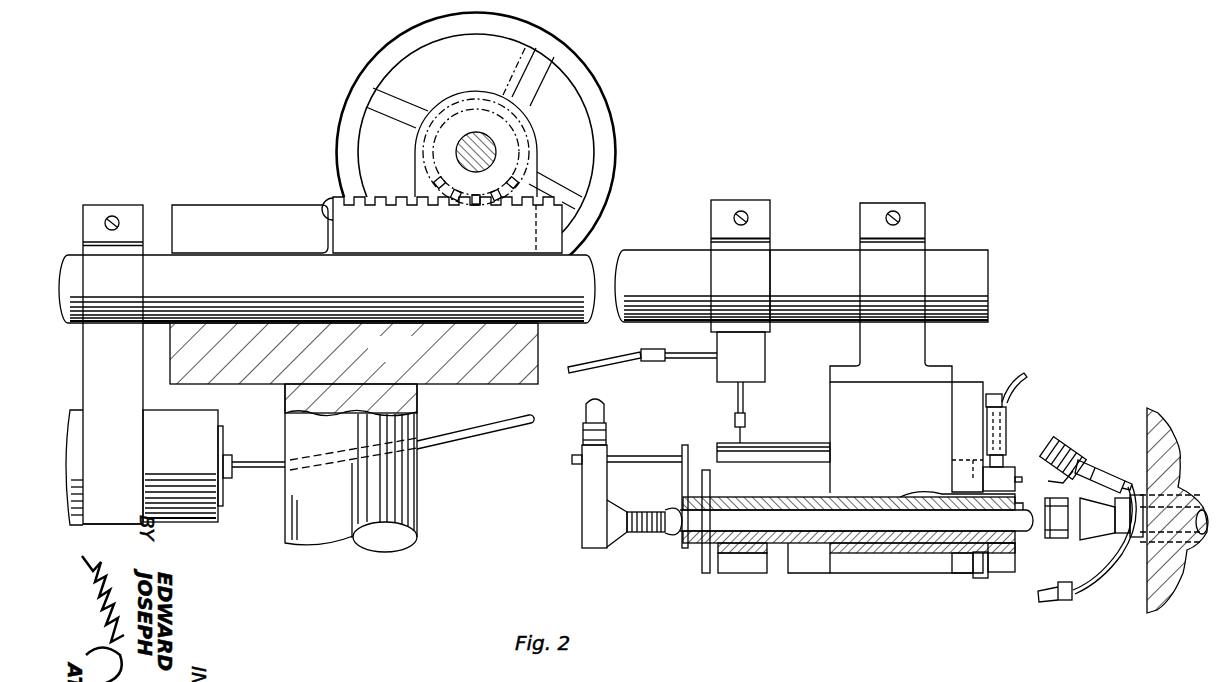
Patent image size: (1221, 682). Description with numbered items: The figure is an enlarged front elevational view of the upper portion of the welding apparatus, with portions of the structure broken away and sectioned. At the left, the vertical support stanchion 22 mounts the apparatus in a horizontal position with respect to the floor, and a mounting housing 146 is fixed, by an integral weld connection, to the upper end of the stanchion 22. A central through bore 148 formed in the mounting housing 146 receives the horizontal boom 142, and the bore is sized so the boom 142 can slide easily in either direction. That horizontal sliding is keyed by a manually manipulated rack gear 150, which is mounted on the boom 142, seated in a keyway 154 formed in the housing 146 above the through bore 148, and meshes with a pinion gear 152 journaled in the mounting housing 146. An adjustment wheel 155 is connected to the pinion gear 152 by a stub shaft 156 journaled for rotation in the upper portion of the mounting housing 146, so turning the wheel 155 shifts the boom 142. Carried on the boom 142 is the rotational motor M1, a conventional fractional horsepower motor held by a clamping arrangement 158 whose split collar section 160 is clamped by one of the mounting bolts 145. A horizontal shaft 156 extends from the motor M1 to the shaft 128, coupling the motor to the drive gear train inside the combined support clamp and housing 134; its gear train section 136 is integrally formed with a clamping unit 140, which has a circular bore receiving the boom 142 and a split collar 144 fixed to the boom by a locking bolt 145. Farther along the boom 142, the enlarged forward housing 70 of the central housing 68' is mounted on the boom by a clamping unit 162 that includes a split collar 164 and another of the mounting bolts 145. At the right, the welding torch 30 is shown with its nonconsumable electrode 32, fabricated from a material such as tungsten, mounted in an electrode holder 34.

The vertical support stanchion 22 is at (418, 494).
The welding torch 30 is at (1108, 467).
The nonconsumable electrode 32 is at (1140, 478).
The electrode holder 34 is at (1048, 437).
The central housing 68' is at (773, 430).
The enlarged forward housing 70 is at (830, 386).
The shaft 128 is at (708, 336).
The combined support clamp and housing 134 is at (714, 383).
The gear train section 136 is at (768, 372).
The clamping unit 140 is at (756, 203).
The horizontal boom 142 is at (985, 270).
The split collar 144 is at (778, 224).
The locking bolt 145 is at (108, 216).
The mounting housing 146 is at (414, 361).
The central through bore 148 is at (177, 324).
The rack gear 150 is at (546, 244).
The pinion gear 152 is at (467, 124).
The keyway 154 is at (330, 204).
The adjustment wheel 155 is at (578, 63).
The stub shaft 156 is at (483, 152).
The clamping arrangement 158 is at (97, 392).
The split collar section 160 is at (92, 242).
The clamping unit 162 is at (930, 340).
The split collar 164 is at (921, 203).
The rotational motor M1 is at (200, 521).